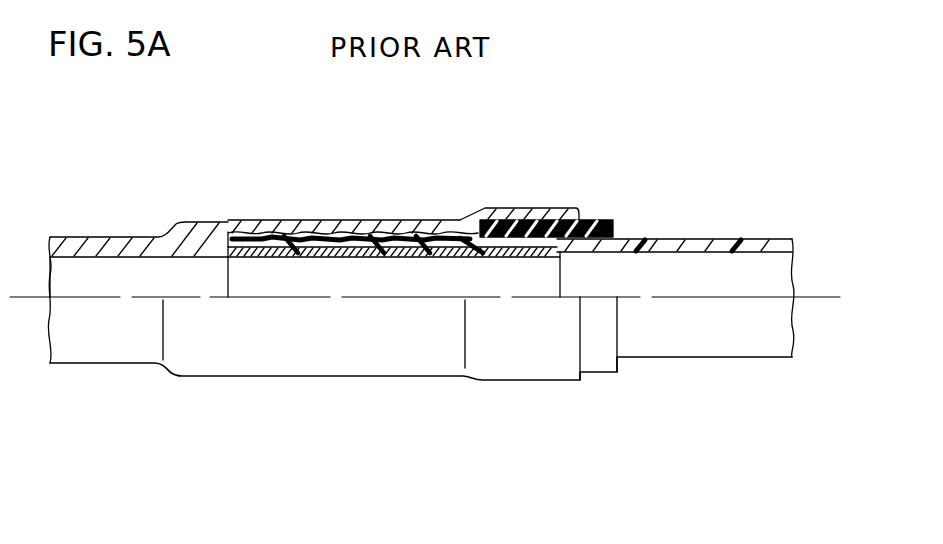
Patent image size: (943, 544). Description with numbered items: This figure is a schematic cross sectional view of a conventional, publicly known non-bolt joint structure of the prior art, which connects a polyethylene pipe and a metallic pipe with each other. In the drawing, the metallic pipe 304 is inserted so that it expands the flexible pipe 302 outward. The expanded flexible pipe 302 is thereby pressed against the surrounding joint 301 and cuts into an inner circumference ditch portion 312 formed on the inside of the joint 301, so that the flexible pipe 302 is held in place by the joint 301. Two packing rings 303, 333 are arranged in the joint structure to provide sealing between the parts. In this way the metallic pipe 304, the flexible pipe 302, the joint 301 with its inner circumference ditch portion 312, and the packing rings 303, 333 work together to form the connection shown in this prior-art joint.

The joint 301 is at (174, 229).
The flexible pipe 302 is at (712, 248).
The packing ring 303 is at (598, 219).
The metallic pipe 304 is at (347, 258).
The inner circumference ditch portion 312 is at (381, 219).
The packing ring 333 is at (257, 236).